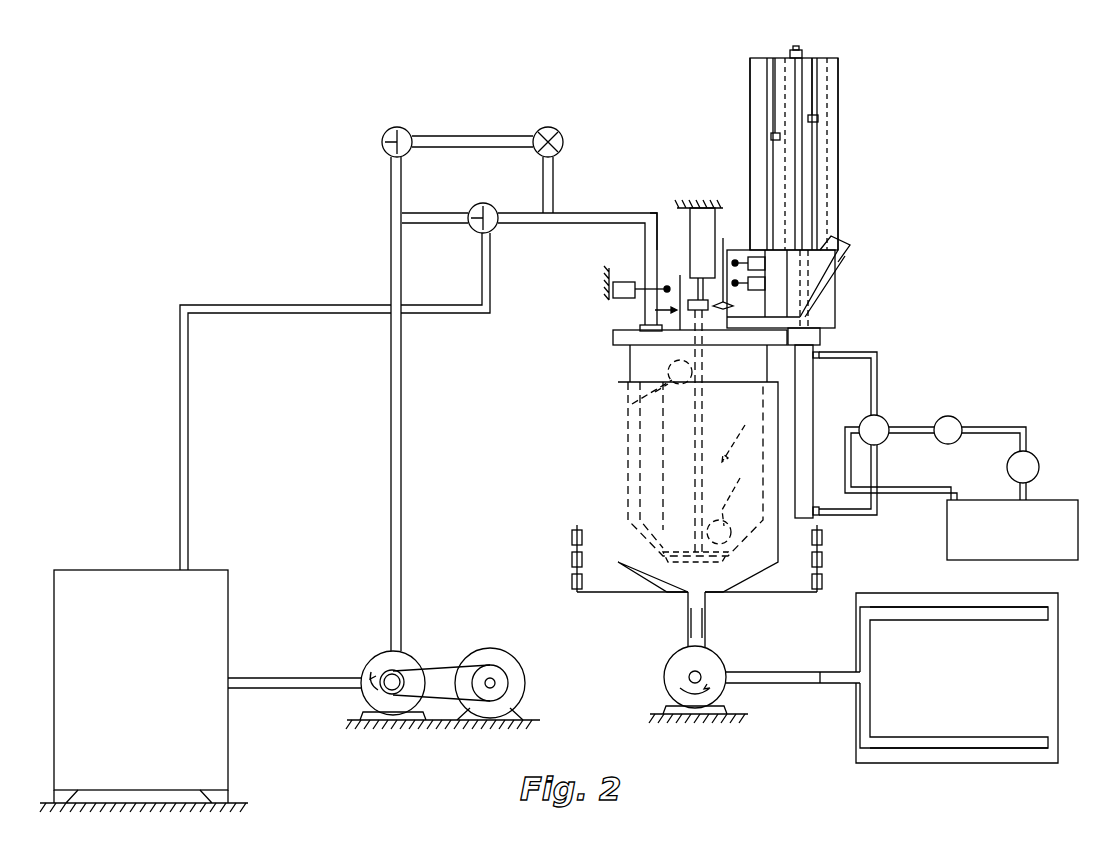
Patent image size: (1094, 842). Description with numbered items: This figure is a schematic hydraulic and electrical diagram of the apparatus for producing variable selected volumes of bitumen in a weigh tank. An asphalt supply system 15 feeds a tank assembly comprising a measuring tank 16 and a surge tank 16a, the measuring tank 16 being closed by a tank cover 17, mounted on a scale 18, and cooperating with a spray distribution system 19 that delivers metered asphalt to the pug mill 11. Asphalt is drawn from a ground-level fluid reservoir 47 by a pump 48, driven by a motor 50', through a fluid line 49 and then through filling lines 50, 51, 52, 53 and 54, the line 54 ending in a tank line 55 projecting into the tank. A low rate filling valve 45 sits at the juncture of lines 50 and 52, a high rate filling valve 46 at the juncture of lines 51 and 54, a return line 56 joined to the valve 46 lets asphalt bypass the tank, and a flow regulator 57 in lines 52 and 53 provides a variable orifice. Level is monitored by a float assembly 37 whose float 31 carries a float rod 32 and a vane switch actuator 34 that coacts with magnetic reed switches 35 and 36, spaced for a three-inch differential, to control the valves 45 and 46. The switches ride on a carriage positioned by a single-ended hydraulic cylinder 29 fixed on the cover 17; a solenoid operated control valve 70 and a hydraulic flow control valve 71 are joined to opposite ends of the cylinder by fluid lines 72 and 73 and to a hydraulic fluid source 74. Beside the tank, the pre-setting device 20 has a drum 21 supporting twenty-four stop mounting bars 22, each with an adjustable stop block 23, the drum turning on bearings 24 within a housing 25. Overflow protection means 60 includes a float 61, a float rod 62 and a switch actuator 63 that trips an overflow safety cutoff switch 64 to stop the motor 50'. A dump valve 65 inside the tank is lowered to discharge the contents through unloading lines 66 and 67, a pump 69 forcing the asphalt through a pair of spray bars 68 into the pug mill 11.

The pug mill 11 is at (960, 760).
The asphalt supply system 15 is at (419, 653).
The measuring tank 16 is at (620, 495).
The surge tank 16a is at (618, 450).
The tank cover 17 is at (620, 350).
The scale 18 is at (790, 598).
The spray distribution system 19 is at (828, 666).
The asphalt measuring tank pre-setting device 20 is at (852, 164).
The drum 21 is at (825, 58).
The stop mounting bar 22 is at (816, 110).
The stop block 23 is at (771, 137).
The bearings 24 is at (798, 48).
The housing 25 is at (762, 58).
The single-ended hydraulic cylinder 29 is at (808, 406).
The float 31 is at (732, 528).
The float rod 32 is at (738, 490).
The vane switch actuator 34 is at (733, 308).
The magnetic reed switch 35 is at (765, 285).
The magnetic reed switch 36 is at (765, 265).
The float assembly 37 is at (739, 430).
The low rate filling valve 45 is at (390, 158).
The high rate filling valve 46 is at (476, 234).
The fluid reservoir 47 is at (208, 762).
The pump 48 is at (395, 705).
The fluid line 49 is at (310, 686).
The filling line 50 is at (420, 404).
The motor 50' is at (518, 684).
The filling line 51 is at (432, 219).
The filling line 52 is at (450, 150).
The filling line 53 is at (553, 190).
The filling line 54 is at (595, 221).
The tank line 55 is at (658, 238).
The return line 56 is at (262, 312).
The flow regulator 57 is at (559, 131).
The pump motor shutdown means 60 is at (647, 311).
The float 61 is at (632, 412).
The float rod 62 is at (636, 398).
The switch actuator 63 is at (672, 272).
The overflow safety cutoff switch 64 is at (612, 296).
The asphalt tank dump valve 65 is at (705, 565).
The tank unloading fluid line 66 is at (707, 615).
The tank unloading fluid line 67 is at (772, 670).
The spray bars 68 is at (1002, 621).
The pump 69 is at (673, 683).
The solenoid operated control valve 70 is at (862, 420).
The hydraulic flow control valve 71 is at (948, 416).
The fluid line 72 is at (850, 518).
The fluid line 73 is at (856, 352).
The hydraulic fluid source 74 is at (1045, 560).